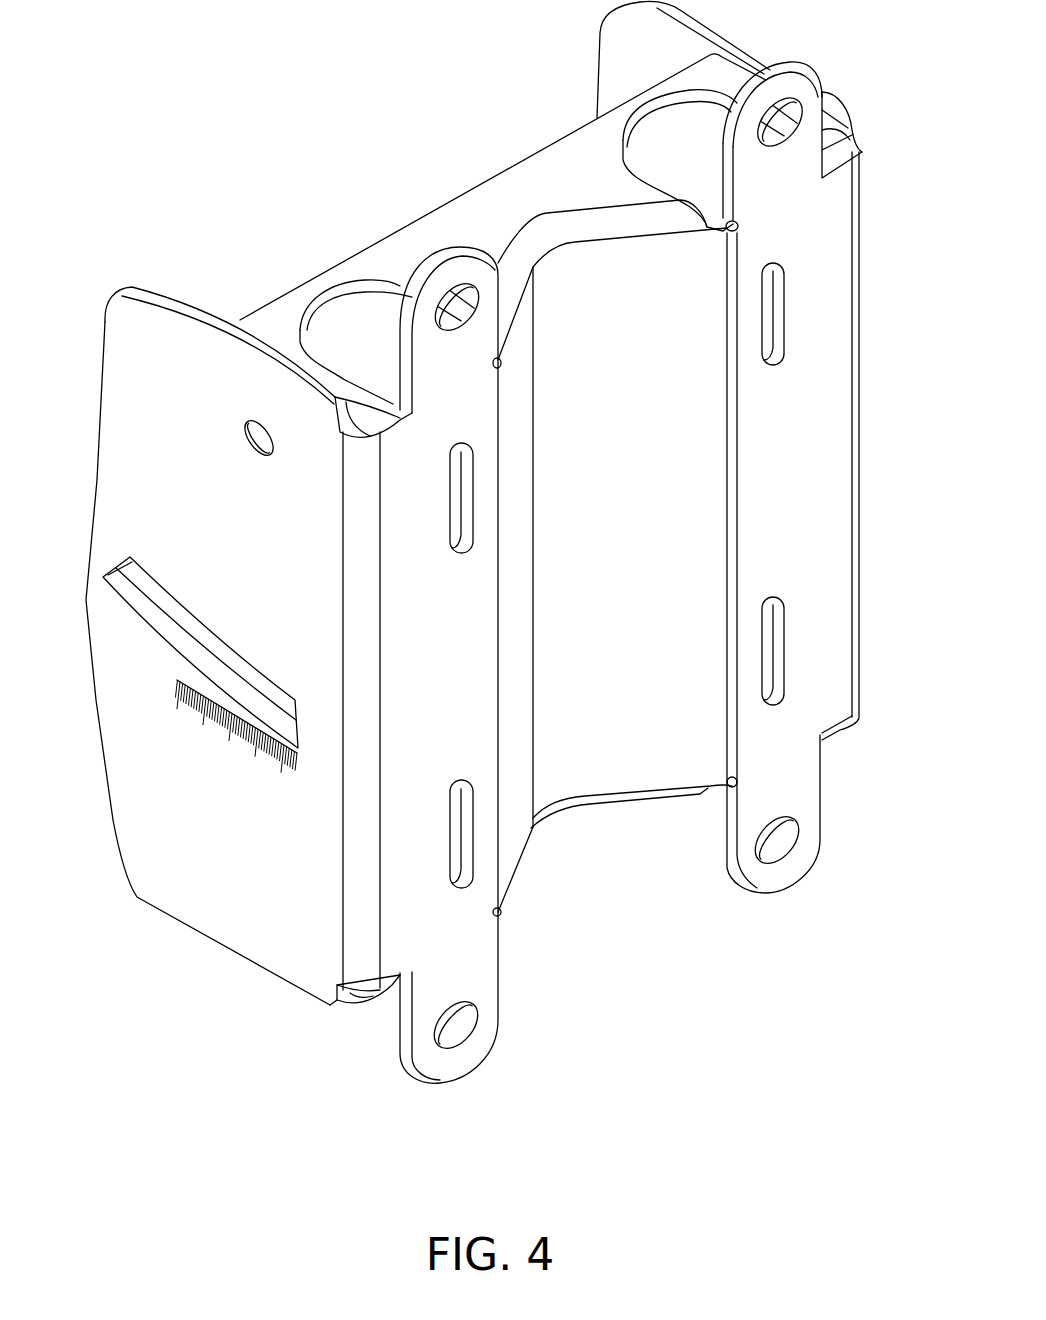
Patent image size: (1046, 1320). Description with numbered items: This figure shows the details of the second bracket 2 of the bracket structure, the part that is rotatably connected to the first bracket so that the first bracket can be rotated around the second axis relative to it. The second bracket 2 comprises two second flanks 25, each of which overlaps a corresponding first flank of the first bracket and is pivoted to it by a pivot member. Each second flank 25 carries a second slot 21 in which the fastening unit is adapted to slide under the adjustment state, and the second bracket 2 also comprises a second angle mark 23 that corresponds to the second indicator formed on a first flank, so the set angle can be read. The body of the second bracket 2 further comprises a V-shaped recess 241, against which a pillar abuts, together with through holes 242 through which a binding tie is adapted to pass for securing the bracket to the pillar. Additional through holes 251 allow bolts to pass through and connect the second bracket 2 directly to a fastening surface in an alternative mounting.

The second bracket 2 is at (256, 974).
The second slot 21 is at (160, 605).
The second angle mark 23 is at (290, 787).
The second flank 25 is at (183, 880).
The V-shaped recess 241 is at (635, 757).
The through holes 242 is at (450, 500).
The through holes 251 is at (781, 108).